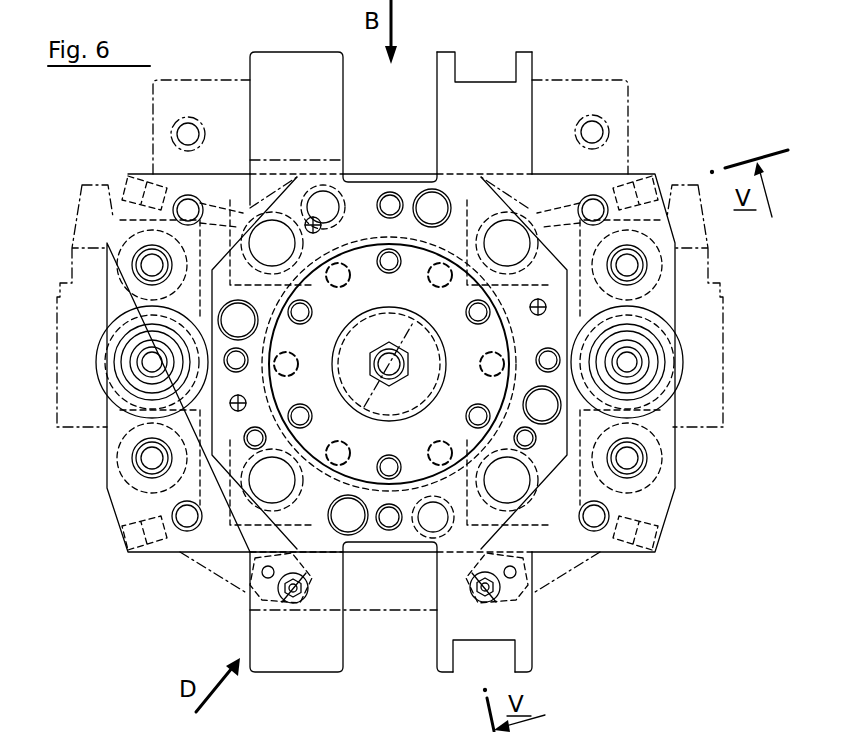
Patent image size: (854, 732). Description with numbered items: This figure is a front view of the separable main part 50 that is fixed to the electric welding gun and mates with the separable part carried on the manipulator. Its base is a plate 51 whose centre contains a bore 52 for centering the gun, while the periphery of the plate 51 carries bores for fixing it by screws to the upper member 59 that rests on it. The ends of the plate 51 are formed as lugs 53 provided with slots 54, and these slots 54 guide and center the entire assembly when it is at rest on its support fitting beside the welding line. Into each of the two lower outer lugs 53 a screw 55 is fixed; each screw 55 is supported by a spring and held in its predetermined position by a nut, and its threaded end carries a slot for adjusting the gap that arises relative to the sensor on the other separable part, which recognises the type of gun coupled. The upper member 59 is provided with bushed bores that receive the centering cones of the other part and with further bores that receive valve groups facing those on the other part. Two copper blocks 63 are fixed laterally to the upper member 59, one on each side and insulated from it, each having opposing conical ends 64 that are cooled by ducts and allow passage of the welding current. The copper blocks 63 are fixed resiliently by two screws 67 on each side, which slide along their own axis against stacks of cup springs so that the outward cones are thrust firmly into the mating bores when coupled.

The separable main part 50 is at (112, 558).
The plate 51 is at (367, 198).
The bore 52 is at (366, 414).
The lugs 53 is at (513, 112).
The slots 54 is at (514, 62).
The screw 55 is at (274, 606).
The upper member 59 is at (222, 183).
The copper blocks 63 is at (92, 382).
The conical end 64 is at (150, 362).
The screws 67 is at (150, 265).